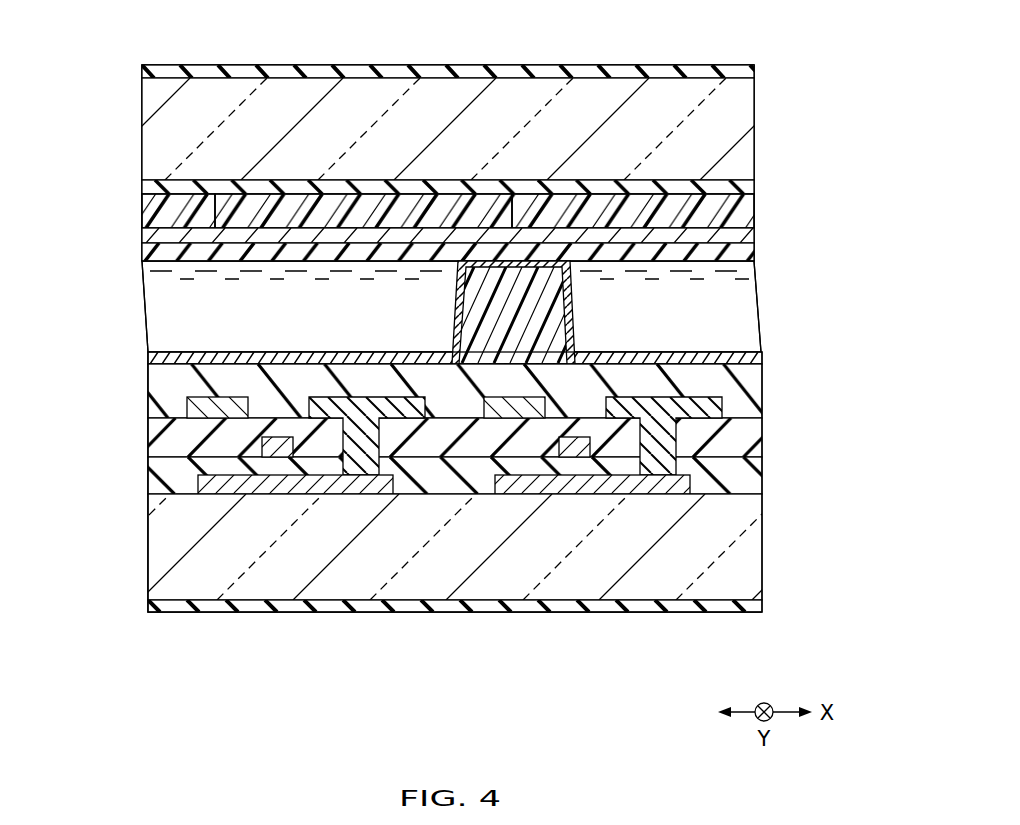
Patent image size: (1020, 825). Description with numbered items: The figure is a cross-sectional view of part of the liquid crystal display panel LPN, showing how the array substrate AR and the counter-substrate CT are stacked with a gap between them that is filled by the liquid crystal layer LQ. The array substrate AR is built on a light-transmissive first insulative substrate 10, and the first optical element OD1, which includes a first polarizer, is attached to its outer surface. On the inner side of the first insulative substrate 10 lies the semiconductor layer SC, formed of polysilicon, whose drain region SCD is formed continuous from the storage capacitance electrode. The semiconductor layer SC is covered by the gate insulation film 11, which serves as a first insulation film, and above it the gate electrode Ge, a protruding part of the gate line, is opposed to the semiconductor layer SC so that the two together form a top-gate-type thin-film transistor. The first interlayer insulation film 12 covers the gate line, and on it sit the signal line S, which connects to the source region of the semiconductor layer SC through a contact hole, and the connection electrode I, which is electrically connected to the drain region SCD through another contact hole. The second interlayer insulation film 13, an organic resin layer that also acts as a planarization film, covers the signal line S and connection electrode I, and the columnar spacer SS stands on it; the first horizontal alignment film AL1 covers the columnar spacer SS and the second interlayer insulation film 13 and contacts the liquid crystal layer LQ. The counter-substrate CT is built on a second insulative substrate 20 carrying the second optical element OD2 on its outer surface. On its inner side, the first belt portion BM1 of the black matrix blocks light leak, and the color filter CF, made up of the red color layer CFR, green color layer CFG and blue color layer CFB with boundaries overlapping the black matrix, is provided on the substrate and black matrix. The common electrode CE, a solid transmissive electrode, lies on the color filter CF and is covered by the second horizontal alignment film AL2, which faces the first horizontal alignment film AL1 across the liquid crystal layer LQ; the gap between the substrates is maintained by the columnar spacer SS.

The liquid crystal display panel LPN is at (770, 69).
The counter-substrate CT is at (131, 123).
The array substrate AR is at (126, 538).
The second optical element OD2 is at (486, 65).
The first optical element OD1 is at (447, 612).
The second insulative substrate 20 is at (745, 138).
The first insulative substrate 10 is at (757, 560).
The first belt portion BM1 is at (145, 190).
The color filter CF is at (764, 207).
The green color layer CFG is at (180, 202).
The blue color layer CFB is at (350, 202).
The red color layer CFR is at (661, 202).
The common electrode CE is at (745, 240).
The second horizontal alignment film AL2 is at (745, 253).
The first horizontal alignment film AL1 is at (762, 357).
The liquid crystal layer LQ is at (743, 307).
The columnar spacer SS is at (558, 312).
The second interlayer insulation film 13 is at (760, 400).
The first interlayer insulation film 12 is at (756, 443).
The gate insulation film 11 is at (755, 480).
The signal line S is at (188, 418).
The semiconductor layer SC is at (222, 494).
The gate electrode Ge is at (277, 457).
The drain region SCD is at (348, 476).
The connection electrode I is at (405, 410).